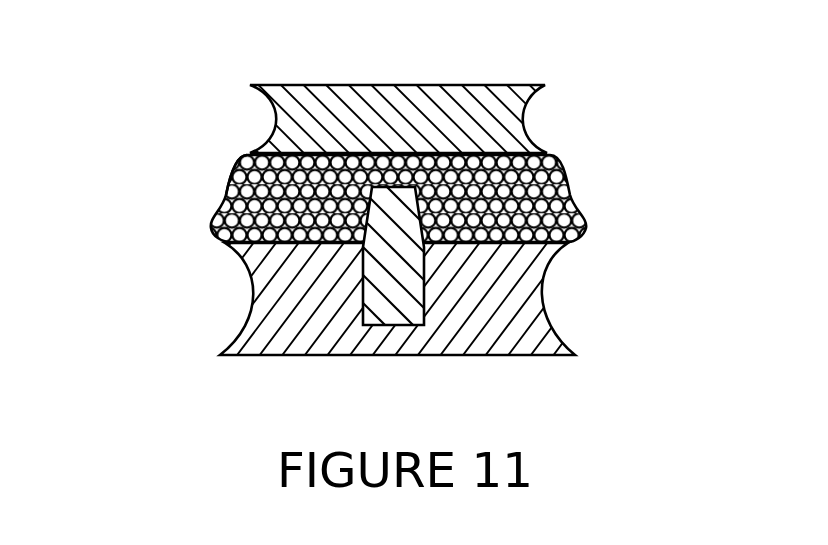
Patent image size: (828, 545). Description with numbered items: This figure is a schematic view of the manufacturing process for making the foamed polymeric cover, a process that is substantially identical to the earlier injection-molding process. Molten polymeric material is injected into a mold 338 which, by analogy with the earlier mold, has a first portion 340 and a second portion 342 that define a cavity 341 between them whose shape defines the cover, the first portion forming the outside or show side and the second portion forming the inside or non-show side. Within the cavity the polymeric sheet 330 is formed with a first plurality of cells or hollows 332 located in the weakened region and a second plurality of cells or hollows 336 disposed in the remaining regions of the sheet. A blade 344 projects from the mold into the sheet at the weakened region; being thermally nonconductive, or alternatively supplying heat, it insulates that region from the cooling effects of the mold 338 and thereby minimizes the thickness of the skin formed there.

The polymeric sheet 330 is at (402, 196).
The first plurality of cells or hollows 332 is at (423, 151).
The second plurality of cells or hollows 336 is at (570, 192).
The mold 338 is at (356, 196).
The upper substrate 340 is at (527, 106).
The edge of conductive particle layer 341 is at (193, 190).
The lower substrate 342 is at (548, 310).
The blade 344 is at (368, 272).